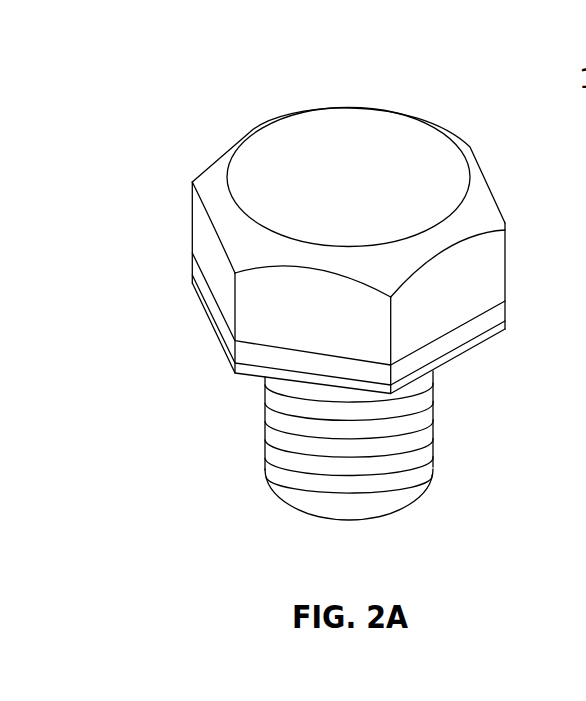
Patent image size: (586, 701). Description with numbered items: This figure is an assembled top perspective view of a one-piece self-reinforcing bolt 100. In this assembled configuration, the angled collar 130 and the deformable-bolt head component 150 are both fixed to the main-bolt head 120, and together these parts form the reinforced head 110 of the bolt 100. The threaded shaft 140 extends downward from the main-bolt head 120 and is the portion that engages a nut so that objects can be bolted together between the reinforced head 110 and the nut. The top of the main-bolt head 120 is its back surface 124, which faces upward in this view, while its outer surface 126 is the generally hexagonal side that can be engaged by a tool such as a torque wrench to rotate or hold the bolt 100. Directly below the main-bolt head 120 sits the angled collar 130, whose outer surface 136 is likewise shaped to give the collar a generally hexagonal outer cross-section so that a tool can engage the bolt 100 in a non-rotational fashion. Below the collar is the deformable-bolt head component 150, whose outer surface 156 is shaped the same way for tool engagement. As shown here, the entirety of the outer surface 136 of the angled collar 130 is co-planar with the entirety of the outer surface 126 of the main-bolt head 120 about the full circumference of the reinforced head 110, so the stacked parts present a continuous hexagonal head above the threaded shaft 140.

The bolt 100 is at (208, 132).
The reinforced head 110 is at (510, 210).
The main-bolt head 120 is at (198, 223).
The back surface 124 is at (381, 186).
The outer surface 126 is at (469, 316).
The angled collar 130 is at (200, 300).
The outer surface 136 is at (442, 347).
The deformable-bolt head component 150 is at (217, 350).
The outer surface 156 is at (440, 367).
The threaded shaft 140 is at (438, 475).